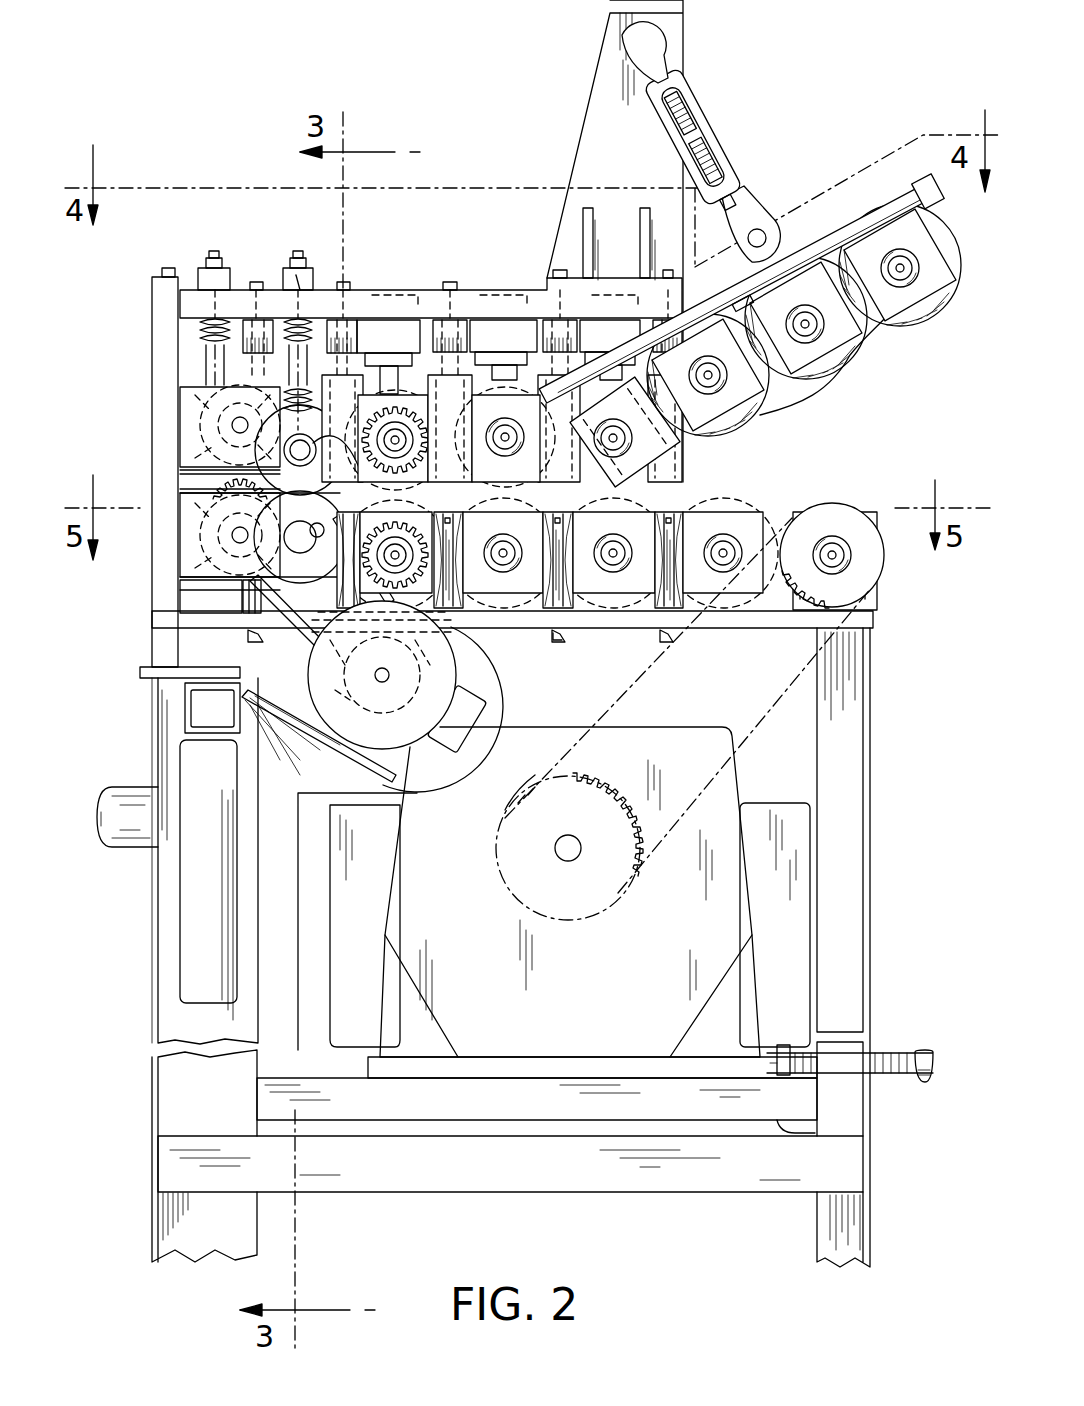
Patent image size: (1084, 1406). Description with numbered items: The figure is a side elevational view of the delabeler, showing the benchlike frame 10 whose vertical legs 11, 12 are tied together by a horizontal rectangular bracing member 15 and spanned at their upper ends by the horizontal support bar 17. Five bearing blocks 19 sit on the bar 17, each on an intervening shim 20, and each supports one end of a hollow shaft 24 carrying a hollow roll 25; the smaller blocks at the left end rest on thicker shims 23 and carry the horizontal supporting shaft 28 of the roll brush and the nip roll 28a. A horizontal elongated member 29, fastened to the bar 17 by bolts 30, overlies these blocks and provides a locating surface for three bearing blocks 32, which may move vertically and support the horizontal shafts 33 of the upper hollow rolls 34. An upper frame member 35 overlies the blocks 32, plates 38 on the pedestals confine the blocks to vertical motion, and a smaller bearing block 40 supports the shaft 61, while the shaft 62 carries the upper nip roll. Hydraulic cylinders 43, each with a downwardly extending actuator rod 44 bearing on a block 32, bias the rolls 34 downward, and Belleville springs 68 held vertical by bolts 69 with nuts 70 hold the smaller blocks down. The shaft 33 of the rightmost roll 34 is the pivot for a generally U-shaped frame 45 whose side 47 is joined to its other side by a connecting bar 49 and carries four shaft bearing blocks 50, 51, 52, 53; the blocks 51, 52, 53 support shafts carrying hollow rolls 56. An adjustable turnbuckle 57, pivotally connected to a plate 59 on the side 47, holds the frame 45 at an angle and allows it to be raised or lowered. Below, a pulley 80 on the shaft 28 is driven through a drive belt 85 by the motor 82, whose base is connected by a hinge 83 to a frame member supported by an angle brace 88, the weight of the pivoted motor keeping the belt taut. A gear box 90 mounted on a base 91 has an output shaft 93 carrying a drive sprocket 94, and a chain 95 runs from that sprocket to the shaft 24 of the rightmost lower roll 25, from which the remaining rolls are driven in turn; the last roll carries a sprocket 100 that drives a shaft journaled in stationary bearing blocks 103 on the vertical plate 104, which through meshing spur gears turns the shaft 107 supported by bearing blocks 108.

The benchlike frame 10 is at (905, 764).
The vertical leg 11 is at (862, 868).
The vertical leg 12 is at (165, 1118).
The horizontal rectangular bracing member 15 is at (565, 1167).
The horizontal elongated support bar 17 is at (612, 625).
The bearing block 19 is at (803, 543).
The shim 20 is at (558, 632).
The shim 23 is at (272, 644).
The hollow shaft 24 is at (436, 575).
The hollow roll 25 is at (635, 548).
The horizontal supporting shaft 28 is at (300, 537).
The nip roll 28a is at (178, 548).
The horizontal elongated member 29 is at (648, 493).
The bolt 30 is at (655, 633).
The bearing block 32 is at (703, 458).
The horizontal shaft 33 is at (503, 456).
The upper hollow roll 34 is at (388, 334).
The upper frame member 35 is at (322, 297).
The plate 38 is at (454, 429).
The smaller bearing block 40 is at (313, 443).
The hydraulic cylinder 43 is at (603, 330).
The actuator rod 44 is at (776, 228).
The U-shaped frame 45 is at (885, 205).
The side 47 is at (822, 242).
The connecting bar 49 is at (928, 190).
The shaft bearing block 50 is at (611, 418).
The shaft bearing block 51 is at (708, 375).
The shaft bearing block 52 is at (798, 308).
The shaft bearing block 53 is at (898, 251).
The hollow roll 56 is at (836, 372).
The adjustable turnbuckle 57 is at (728, 122).
The plate 59 is at (733, 293).
The shaft 61 is at (302, 442).
The shaft 62 is at (160, 480).
The Belleville spring 68 is at (228, 332).
The vertical bolt 69 is at (297, 275).
The nut 70 is at (305, 265).
The pulley 80 is at (322, 532).
The motor 82 is at (417, 690).
The hinge 83 is at (245, 698).
The drive belt 85 is at (312, 648).
The angle brace 88 is at (205, 930).
The gear box 90 is at (692, 951).
The base 91 is at (573, 1114).
The output shaft 93 is at (568, 857).
The drive sprocket 94 is at (535, 882).
The chain 95 is at (775, 718).
The sprocket 100 is at (447, 535).
The stationary bearing block 103 is at (178, 578).
The vertical plate 104 is at (165, 350).
The shaft 107 is at (235, 428).
The bearing block 108 is at (250, 395).